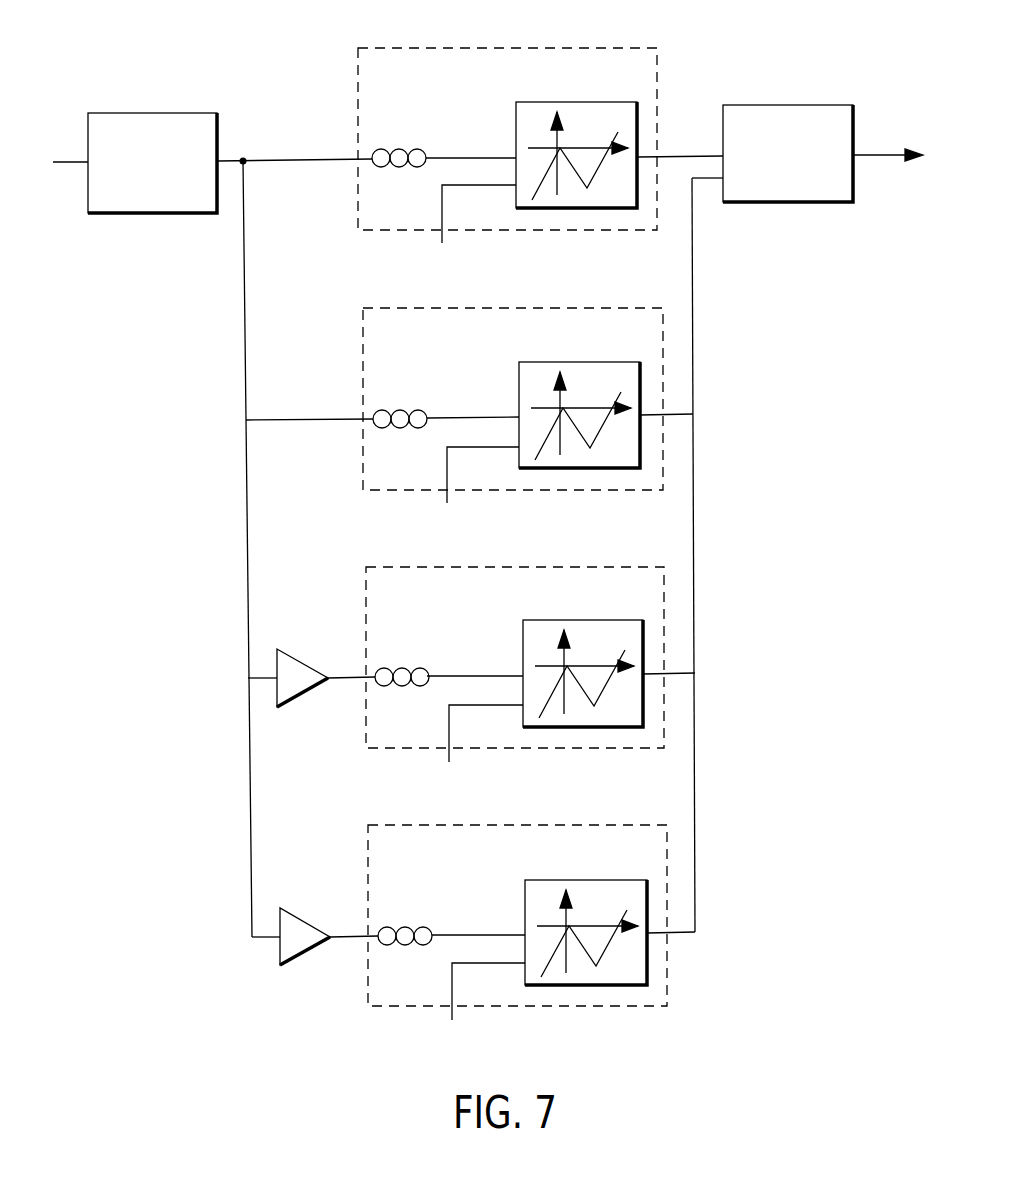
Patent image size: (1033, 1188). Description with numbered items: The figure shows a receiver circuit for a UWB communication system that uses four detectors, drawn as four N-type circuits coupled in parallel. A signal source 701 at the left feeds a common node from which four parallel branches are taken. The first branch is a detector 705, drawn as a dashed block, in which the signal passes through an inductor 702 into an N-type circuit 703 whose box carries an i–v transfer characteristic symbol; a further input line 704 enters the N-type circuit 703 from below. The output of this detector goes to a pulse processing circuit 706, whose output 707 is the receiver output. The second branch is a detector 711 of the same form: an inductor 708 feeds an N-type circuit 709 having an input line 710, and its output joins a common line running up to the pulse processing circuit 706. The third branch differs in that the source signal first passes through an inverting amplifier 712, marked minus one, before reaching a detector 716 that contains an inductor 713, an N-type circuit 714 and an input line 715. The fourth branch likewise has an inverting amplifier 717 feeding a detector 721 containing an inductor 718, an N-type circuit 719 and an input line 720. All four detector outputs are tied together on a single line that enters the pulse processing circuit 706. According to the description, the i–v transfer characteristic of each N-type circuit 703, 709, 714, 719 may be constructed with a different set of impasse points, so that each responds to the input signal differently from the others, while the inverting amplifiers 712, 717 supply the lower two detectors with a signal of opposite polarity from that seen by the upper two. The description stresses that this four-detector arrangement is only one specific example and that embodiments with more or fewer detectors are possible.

The signal source 701 is at (72, 162).
The inductor 702 is at (425, 148).
The comparator 703 is at (567, 102).
The threshold control input 704 is at (471, 231).
The pulse generating channel 705 is at (590, 230).
The pulse processing circuit 706 is at (790, 105).
The output 707 is at (878, 152).
The inductor 708 is at (421, 410).
The comparator 709 is at (585, 362).
The threshold control input 710 is at (473, 491).
The pulse generating channel 711 is at (597, 490).
The inverting amplifier 712 is at (303, 653).
The inductor 713 is at (424, 668).
The comparator 714 is at (588, 620).
The threshold control input 715 is at (478, 750).
The pulse generating channel 716 is at (598, 748).
The inverting amplifier 717 is at (305, 911).
The inductor 718 is at (428, 927).
The comparator 719 is at (590, 880).
The threshold control input 720 is at (480, 1008).
The pulse generating channel 721 is at (602, 1006).